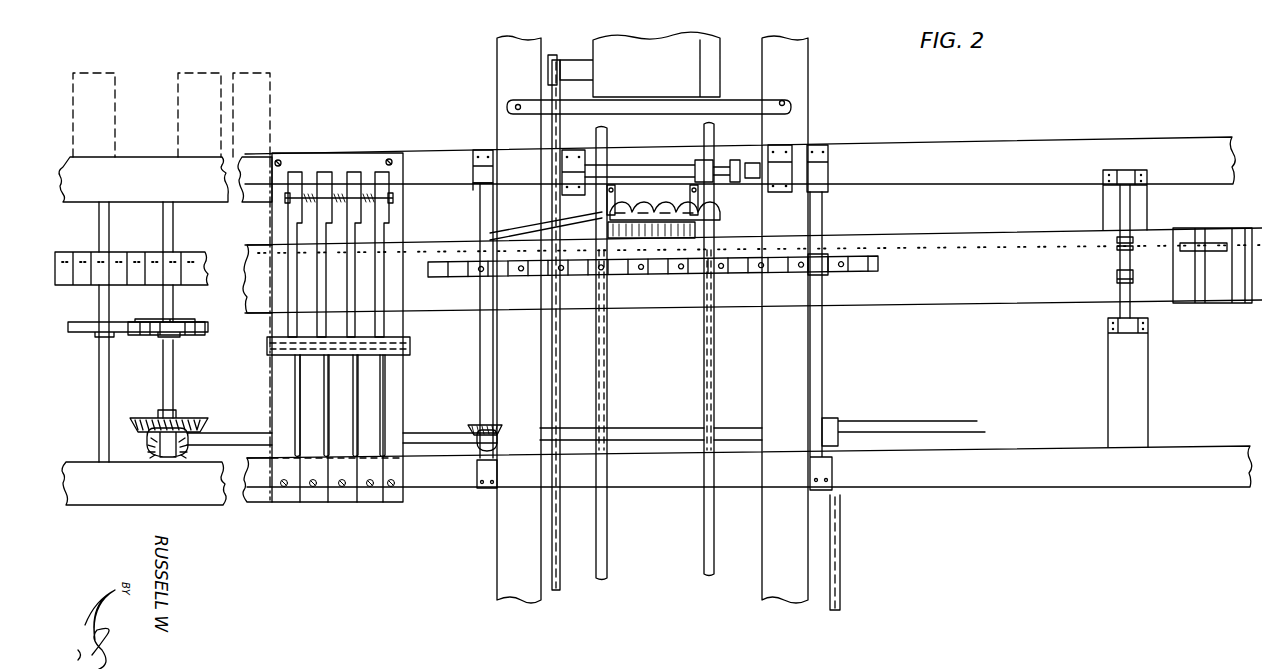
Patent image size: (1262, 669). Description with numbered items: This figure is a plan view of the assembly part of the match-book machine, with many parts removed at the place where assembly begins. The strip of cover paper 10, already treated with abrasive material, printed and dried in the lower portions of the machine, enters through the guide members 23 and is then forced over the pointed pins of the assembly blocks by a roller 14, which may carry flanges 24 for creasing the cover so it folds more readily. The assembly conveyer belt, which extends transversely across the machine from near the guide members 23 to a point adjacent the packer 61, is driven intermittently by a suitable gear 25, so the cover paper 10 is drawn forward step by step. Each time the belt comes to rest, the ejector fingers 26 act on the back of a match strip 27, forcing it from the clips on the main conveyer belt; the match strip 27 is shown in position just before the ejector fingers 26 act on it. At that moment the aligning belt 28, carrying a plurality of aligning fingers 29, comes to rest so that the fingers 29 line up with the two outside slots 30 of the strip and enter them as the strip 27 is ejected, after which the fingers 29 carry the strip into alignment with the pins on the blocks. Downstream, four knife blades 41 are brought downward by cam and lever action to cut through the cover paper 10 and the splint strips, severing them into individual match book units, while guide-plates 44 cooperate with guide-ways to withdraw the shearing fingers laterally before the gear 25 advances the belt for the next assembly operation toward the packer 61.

The packer 61 is at (105, 85).
The gear 25 is at (185, 335).
The knife blades 41 is at (375, 242).
The guide-plates 44 is at (390, 400).
The ejector fingers 26 is at (676, 208).
The match strip 27 is at (690, 230).
The outside slots 30 is at (628, 240).
The aligning fingers 29 is at (676, 276).
The aligning belt 28 is at (735, 278).
The cover paper 10 is at (1018, 292).
The roller 14 is at (1118, 262).
The flanges 24 is at (1134, 277).
The guide members 23 is at (1185, 286).